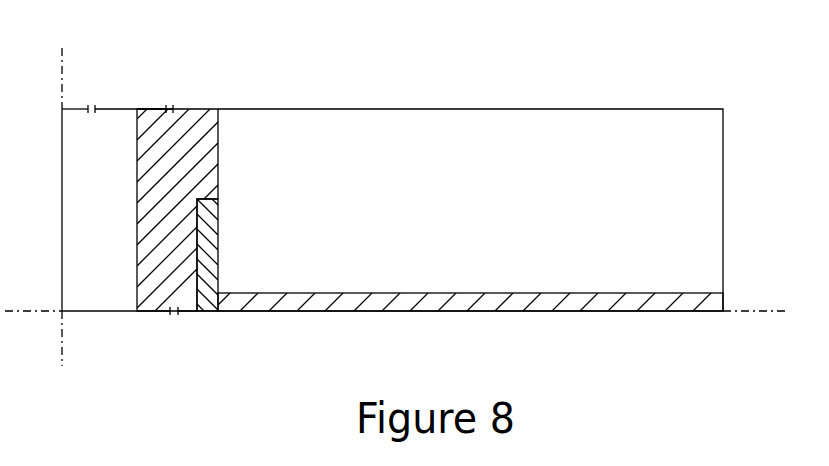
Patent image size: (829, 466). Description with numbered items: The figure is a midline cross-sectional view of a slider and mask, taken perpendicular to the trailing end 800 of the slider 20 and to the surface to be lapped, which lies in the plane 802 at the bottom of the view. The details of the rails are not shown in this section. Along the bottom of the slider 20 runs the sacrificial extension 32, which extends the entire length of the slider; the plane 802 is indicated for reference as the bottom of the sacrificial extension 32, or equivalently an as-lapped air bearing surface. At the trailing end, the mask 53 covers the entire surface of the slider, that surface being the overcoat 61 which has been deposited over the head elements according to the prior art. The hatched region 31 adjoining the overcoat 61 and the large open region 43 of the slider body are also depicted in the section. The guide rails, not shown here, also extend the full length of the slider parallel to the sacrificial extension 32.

The slider 20 is at (559, 89).
The inner wall 31 is at (212, 222).
The sacrificial extension 32 is at (480, 313).
The cavity 43 is at (478, 223).
The mask 53 is at (75, 232).
The overcoat 61 is at (208, 157).
The trailing end 800 is at (64, 75).
The plane 802 is at (22, 314).